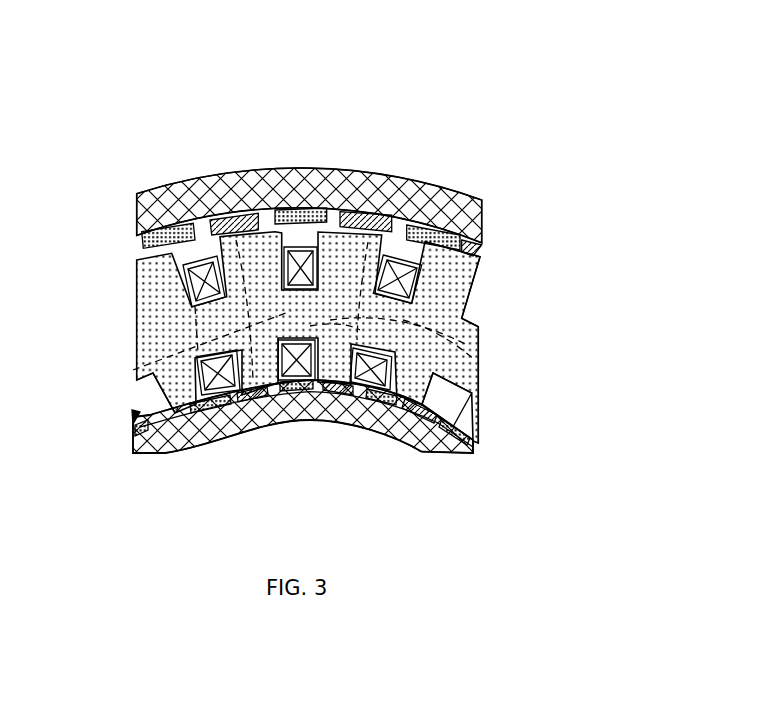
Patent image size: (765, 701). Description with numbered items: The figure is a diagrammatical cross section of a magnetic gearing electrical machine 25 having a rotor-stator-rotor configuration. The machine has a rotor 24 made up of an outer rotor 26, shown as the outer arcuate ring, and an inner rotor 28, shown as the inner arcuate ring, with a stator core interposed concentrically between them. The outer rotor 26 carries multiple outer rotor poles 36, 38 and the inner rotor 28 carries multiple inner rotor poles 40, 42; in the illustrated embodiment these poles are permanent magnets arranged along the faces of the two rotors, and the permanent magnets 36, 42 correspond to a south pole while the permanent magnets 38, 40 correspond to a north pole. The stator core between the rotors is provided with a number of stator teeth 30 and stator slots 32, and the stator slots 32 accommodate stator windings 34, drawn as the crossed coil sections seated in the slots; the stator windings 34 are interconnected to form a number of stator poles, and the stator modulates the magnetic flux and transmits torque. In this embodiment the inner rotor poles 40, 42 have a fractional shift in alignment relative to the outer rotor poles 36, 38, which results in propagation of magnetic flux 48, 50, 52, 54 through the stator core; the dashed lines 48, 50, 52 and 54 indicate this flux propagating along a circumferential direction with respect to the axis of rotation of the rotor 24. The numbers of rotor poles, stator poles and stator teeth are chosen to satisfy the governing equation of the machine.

The rotor 24 is at (468, 221).
The magnetic gearing electrical machine 25 is at (556, 63).
The outer rotor 26 is at (462, 190).
The inner rotor 28 is at (453, 453).
The stator teeth 30 is at (136, 262).
The stator slots 32 is at (480, 287).
The stator windings 34 is at (462, 323).
The outer rotor pole 36 is at (316, 210).
The outer rotor pole 38 is at (238, 215).
The inner rotor pole 40 is at (260, 405).
The inner rotor pole 42 is at (296, 396).
The magnetic flux 48 is at (136, 330).
The magnetic flux 50 is at (136, 368).
The magnetic flux 52 is at (465, 352).
The magnetic flux 54 is at (466, 397).